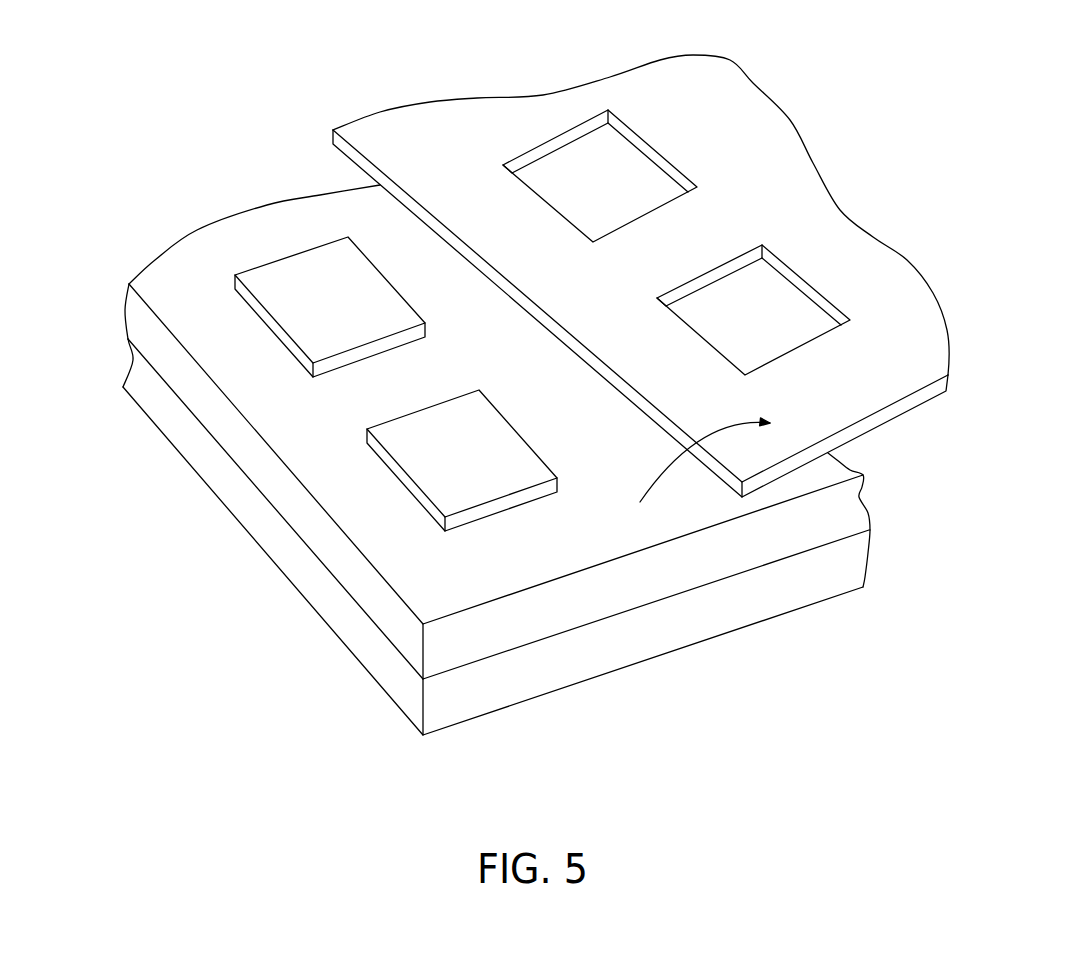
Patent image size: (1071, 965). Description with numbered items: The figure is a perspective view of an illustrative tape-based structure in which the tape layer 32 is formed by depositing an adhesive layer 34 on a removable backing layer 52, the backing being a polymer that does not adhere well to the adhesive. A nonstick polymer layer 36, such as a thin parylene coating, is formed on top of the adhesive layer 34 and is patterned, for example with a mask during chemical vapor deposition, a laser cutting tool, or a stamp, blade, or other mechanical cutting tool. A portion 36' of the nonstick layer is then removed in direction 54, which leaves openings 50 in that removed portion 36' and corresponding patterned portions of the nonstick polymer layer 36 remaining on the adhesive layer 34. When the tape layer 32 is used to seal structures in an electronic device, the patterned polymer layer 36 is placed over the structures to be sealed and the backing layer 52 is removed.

The tape layer 32 is at (463, 458).
The adhesive layer 34 is at (140, 323).
The nonstick polymer layer 36 is at (396, 380).
The portion of layer 36 36' is at (641, 264).
The openings 50 is at (630, 168).
The removable backing layer 52 is at (413, 705).
The direction 54 is at (680, 463).